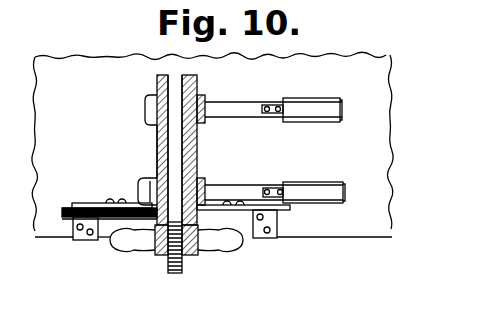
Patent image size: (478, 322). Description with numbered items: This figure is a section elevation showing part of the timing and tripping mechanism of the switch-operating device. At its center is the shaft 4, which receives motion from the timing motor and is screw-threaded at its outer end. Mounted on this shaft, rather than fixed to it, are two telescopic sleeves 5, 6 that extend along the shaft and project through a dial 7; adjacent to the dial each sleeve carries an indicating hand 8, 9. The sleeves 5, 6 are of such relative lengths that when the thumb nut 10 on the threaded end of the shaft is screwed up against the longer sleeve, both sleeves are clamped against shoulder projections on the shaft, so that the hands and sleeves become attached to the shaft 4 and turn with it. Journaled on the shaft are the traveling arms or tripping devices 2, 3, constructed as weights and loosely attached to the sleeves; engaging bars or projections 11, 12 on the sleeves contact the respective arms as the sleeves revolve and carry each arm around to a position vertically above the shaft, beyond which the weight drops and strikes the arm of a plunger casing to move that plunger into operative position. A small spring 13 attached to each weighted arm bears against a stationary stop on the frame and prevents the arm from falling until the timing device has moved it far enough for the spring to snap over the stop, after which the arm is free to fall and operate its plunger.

The traveling arm or tripping device 2 is at (240, 193).
The traveling arm or tripping device 3 is at (240, 110).
The shaft 4 is at (174, 148).
The sleeve 5 is at (193, 157).
The sleeve 6 is at (156, 133).
The dial 7 is at (60, 208).
The indicating hand 8 is at (68, 215).
The indicating hand 9 is at (60, 219).
The thumb nut 10 is at (218, 242).
The engaging bar or projection 11 is at (138, 184).
The engaging bar or projection 12 is at (148, 102).
The spring 13 is at (343, 110).